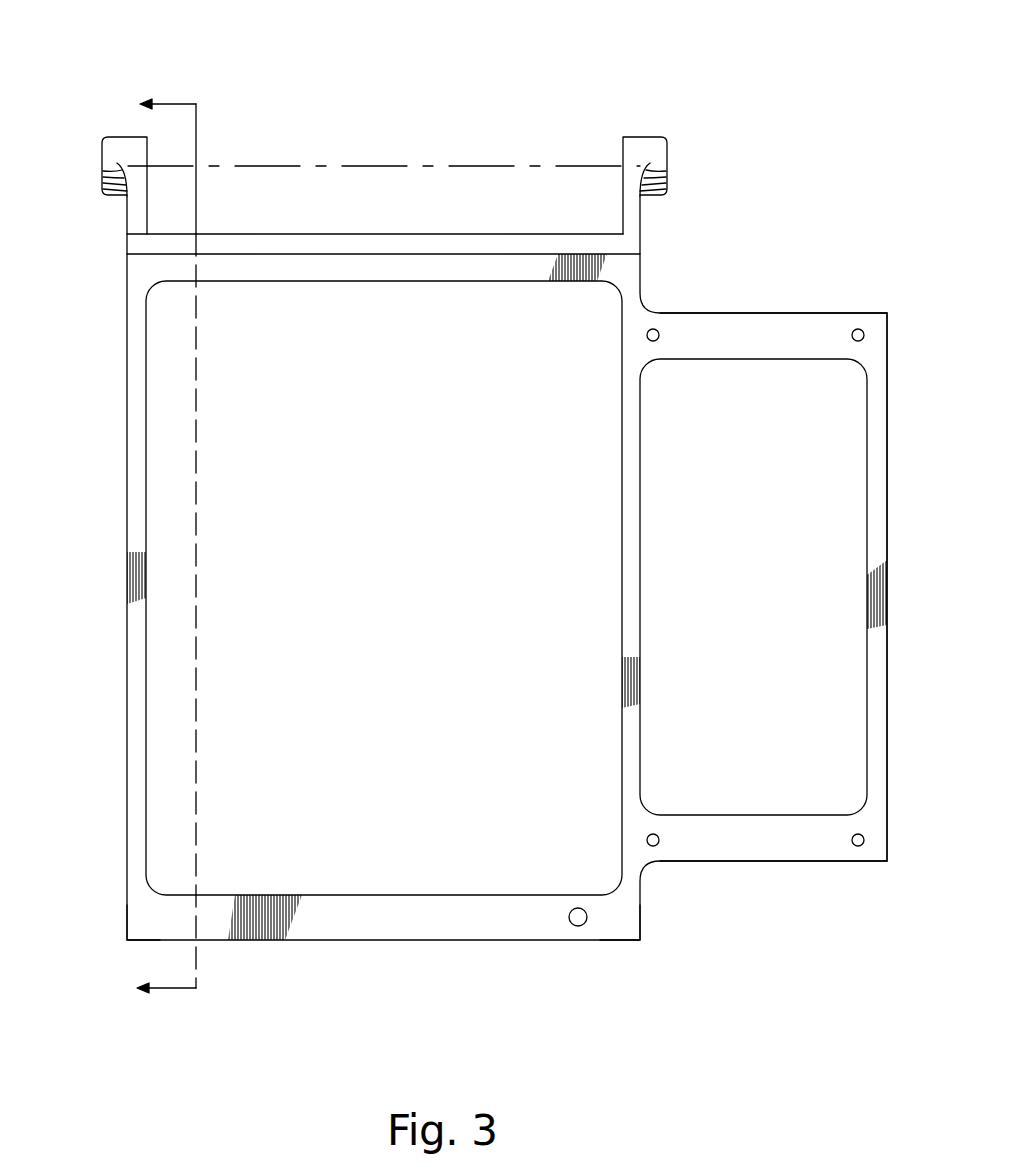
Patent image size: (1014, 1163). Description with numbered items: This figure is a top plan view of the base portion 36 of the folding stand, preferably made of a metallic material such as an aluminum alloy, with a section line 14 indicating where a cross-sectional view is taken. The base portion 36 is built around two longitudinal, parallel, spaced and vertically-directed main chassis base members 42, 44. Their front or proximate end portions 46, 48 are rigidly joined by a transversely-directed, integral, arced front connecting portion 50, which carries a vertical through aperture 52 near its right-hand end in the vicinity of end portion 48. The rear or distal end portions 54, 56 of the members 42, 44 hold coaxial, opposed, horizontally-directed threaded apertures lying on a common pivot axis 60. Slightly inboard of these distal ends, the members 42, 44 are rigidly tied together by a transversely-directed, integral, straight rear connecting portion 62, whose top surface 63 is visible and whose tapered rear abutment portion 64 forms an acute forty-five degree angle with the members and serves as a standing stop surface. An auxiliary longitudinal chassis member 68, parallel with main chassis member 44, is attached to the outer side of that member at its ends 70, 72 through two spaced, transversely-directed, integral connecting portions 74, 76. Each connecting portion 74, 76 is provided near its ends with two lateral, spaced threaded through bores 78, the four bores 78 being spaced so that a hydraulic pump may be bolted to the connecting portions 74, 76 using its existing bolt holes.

The section line 14- 14 is at (166, 547).
The base portion 36 is at (326, 98).
The main chassis base member 42 is at (137, 490).
The main chassis base member 44 is at (630, 592).
The front end portion 46 is at (140, 920).
The front end portion 48 is at (626, 922).
The arced front connecting portion 50 is at (380, 918).
The through aperture 52 is at (578, 908).
The rear end portion 54 is at (110, 152).
The rear end portion 56 is at (658, 155).
The pivot axis 60 is at (413, 160).
The rear connecting portion 62 is at (373, 265).
The top surface 63 is at (461, 267).
The angled abutment portion 64 is at (422, 246).
The auxiliary chassis member 68 is at (880, 555).
The end of auxiliary chassis member 70 is at (866, 848).
The end of auxiliary chassis member 72 is at (866, 313).
The connecting portion 74 is at (747, 845).
The connecting portion 76 is at (722, 318).
The threaded through bores 78 is at (653, 341).